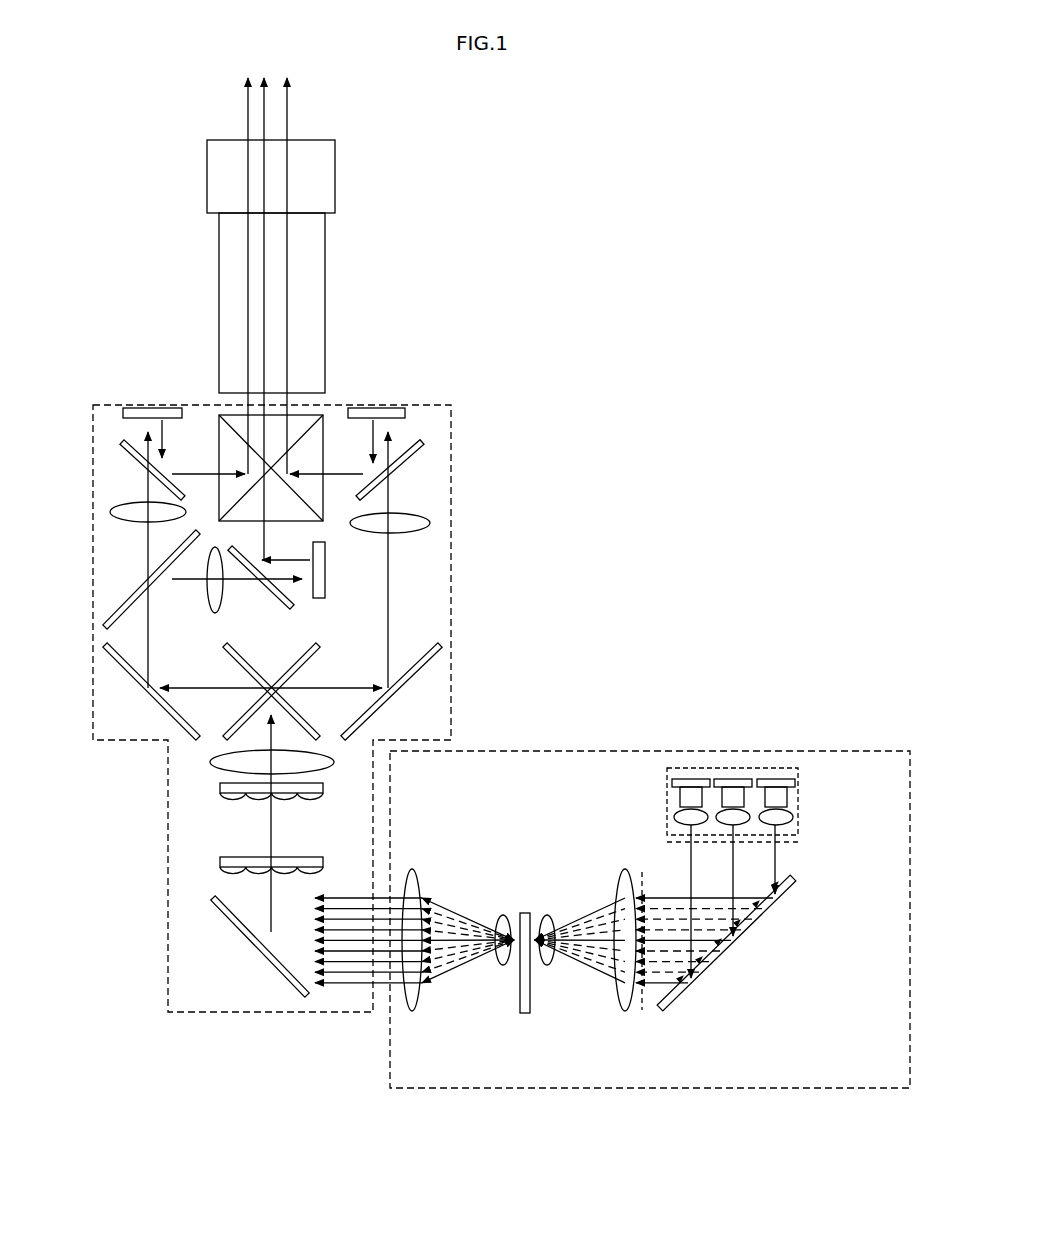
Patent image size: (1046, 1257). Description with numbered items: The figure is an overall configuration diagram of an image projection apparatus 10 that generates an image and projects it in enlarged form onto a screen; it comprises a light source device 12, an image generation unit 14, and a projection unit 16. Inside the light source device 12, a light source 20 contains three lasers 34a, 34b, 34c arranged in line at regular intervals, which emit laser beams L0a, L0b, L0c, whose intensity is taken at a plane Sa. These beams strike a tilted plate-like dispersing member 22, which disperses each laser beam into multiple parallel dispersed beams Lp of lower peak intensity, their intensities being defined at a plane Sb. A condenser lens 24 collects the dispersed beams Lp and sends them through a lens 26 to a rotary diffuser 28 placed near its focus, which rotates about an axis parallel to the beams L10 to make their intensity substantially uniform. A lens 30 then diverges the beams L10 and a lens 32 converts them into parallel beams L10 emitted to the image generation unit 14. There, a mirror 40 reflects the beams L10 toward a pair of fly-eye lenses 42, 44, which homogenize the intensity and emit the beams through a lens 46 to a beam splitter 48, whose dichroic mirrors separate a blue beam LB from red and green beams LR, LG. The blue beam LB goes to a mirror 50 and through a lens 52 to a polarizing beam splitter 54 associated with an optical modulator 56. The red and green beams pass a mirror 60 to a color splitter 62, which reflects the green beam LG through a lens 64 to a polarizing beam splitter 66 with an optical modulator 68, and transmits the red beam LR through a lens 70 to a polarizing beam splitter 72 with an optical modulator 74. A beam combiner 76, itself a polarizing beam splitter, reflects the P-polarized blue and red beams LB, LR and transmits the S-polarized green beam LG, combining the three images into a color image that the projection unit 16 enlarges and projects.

The image projection apparatus 10 is at (690, 490).
The light source device 12 is at (838, 750).
The image generation unit 14 is at (452, 592).
The projection unit 16 is at (379, 263).
The light source 20 is at (763, 777).
The dispersing member 22 is at (746, 931).
The condenser lens 24 is at (632, 1012).
The lens 26 is at (547, 915).
The rotary diffuser 28 is at (525, 1014).
The lens 30 is at (503, 915).
The lens 32 is at (412, 1012).
The laser 34a is at (789, 780).
The laser 34b is at (736, 780).
The laser 34c is at (684, 780).
The mirror 40 is at (276, 973).
The fly-eye lens 42 is at (219, 863).
The fly-eye lens 44 is at (219, 788).
The lens 46 is at (210, 763).
The beam splitter 48 is at (271, 667).
The mirror 50 is at (392, 701).
The lens 52 is at (431, 523).
The polarizing beam splitter 54 is at (392, 473).
The optical modulator 56 is at (381, 407).
The mirror 60 is at (153, 702).
The color splitter 62 is at (119, 612).
The lens 64 is at (206, 615).
The polarizing beam splitter 66 is at (278, 603).
The optical modulator 68 is at (326, 591).
The lens 70 is at (140, 523).
The polarizing beam splitter 72 is at (145, 471).
The optical modulator 74 is at (156, 407).
The beam combiner 76 is at (220, 440).
The beam L10 is at (282, 828).
The red beam LR is at (196, 554).
The green beam LG is at (235, 613).
The blue beam LB is at (329, 554).
The laser beam L0a is at (778, 870).
The laser beam L0b is at (735, 861).
The laser beam L0c is at (687, 854).
The plane Sa is at (752, 846).
The plane Sb is at (645, 931).
The dispersed beam Lp is at (652, 1005).